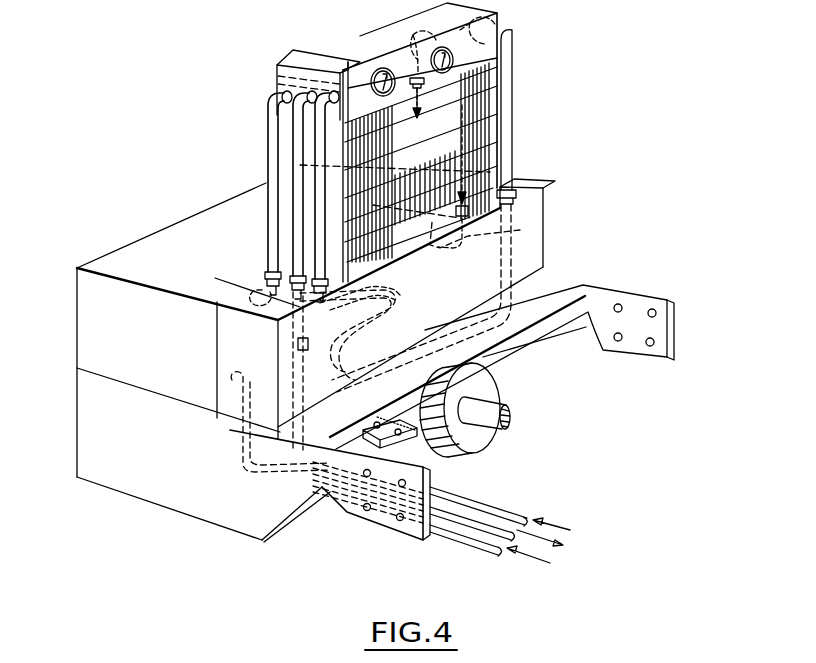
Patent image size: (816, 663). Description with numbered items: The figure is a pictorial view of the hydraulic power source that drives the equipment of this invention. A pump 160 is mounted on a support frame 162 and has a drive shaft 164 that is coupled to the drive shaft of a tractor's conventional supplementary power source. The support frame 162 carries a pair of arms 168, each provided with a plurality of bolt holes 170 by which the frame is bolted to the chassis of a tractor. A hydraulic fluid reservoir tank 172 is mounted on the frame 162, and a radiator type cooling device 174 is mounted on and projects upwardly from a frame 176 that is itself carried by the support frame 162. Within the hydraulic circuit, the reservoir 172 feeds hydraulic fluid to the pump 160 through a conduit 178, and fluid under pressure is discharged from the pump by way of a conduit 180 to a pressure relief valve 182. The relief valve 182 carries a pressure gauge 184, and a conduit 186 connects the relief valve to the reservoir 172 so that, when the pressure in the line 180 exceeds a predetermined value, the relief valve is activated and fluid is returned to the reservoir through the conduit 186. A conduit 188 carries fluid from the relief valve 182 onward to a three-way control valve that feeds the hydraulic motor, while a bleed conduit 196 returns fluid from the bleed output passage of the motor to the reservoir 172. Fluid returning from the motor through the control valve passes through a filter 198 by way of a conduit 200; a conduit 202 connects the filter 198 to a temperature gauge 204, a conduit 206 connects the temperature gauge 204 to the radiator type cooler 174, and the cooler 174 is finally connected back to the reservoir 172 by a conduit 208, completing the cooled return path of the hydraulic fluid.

The pump 160 is at (483, 382).
The support frame 162 is at (155, 492).
The drive shaft 164 is at (512, 422).
The arms 168 is at (623, 288).
The bolt holes 170 is at (397, 519).
The hydraulic fluid reservoir tank 172 is at (138, 250).
The radiator type cooling device 174 is at (472, 152).
The frame 176 is at (533, 203).
The conduit 178 is at (296, 352).
The conduit 180 is at (314, 178).
The pressure relief valve 182 is at (290, 80).
The pressure gauge 184 is at (373, 77).
The conduit 186 is at (267, 117).
The conduit 188 is at (292, 146).
The bleed conduit 196 is at (461, 535).
The filter 198 is at (500, 15).
The conduit 200 is at (510, 72).
The conduit 202 is at (432, 30).
The temperature gauge 204 is at (447, 72).
The conduit 206 is at (415, 50).
The conduit 208 is at (521, 229).